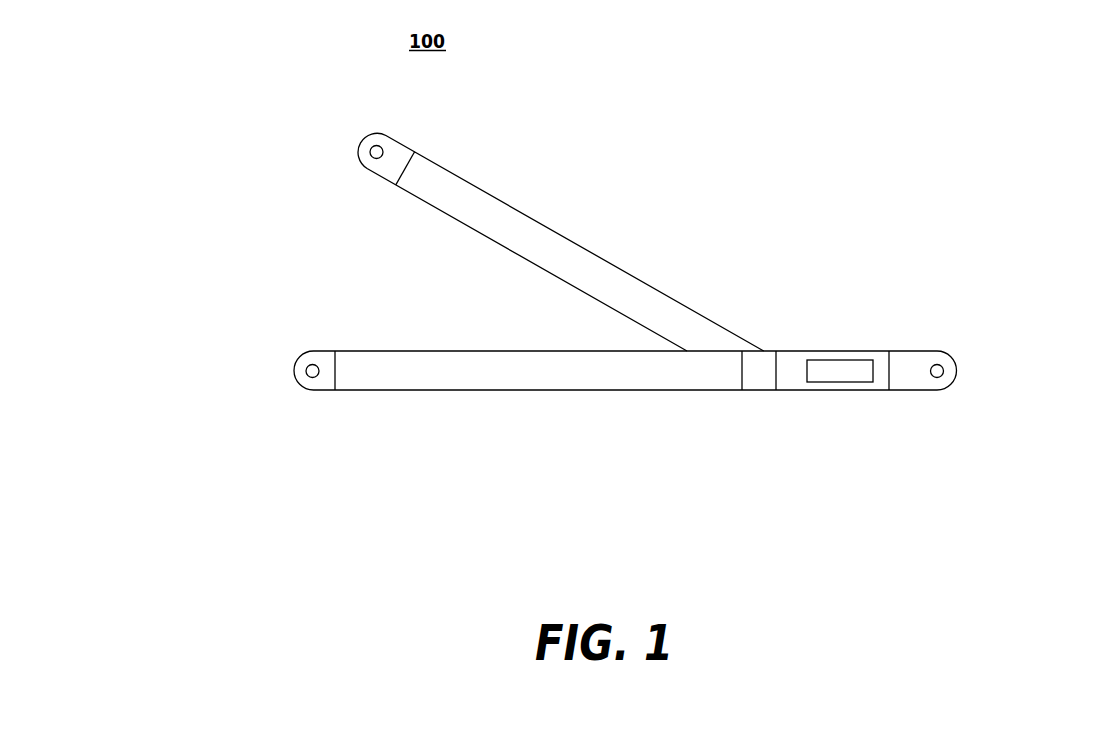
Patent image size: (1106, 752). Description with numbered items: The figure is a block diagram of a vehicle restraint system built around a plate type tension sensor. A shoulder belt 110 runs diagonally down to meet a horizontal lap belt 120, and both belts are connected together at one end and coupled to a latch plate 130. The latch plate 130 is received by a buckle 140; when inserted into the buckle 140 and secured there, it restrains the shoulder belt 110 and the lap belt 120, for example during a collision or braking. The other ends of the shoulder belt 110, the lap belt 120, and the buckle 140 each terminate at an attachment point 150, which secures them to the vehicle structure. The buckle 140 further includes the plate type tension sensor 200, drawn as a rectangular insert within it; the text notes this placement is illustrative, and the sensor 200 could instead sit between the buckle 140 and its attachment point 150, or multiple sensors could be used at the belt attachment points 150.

The shoulder belt 110 is at (612, 256).
The lap belt 120 is at (458, 369).
The latch plate 130 is at (775, 347).
The buckle 140 is at (792, 404).
The attachment point 150 is at (367, 169).
The plate type tension sensor 200 is at (856, 379).